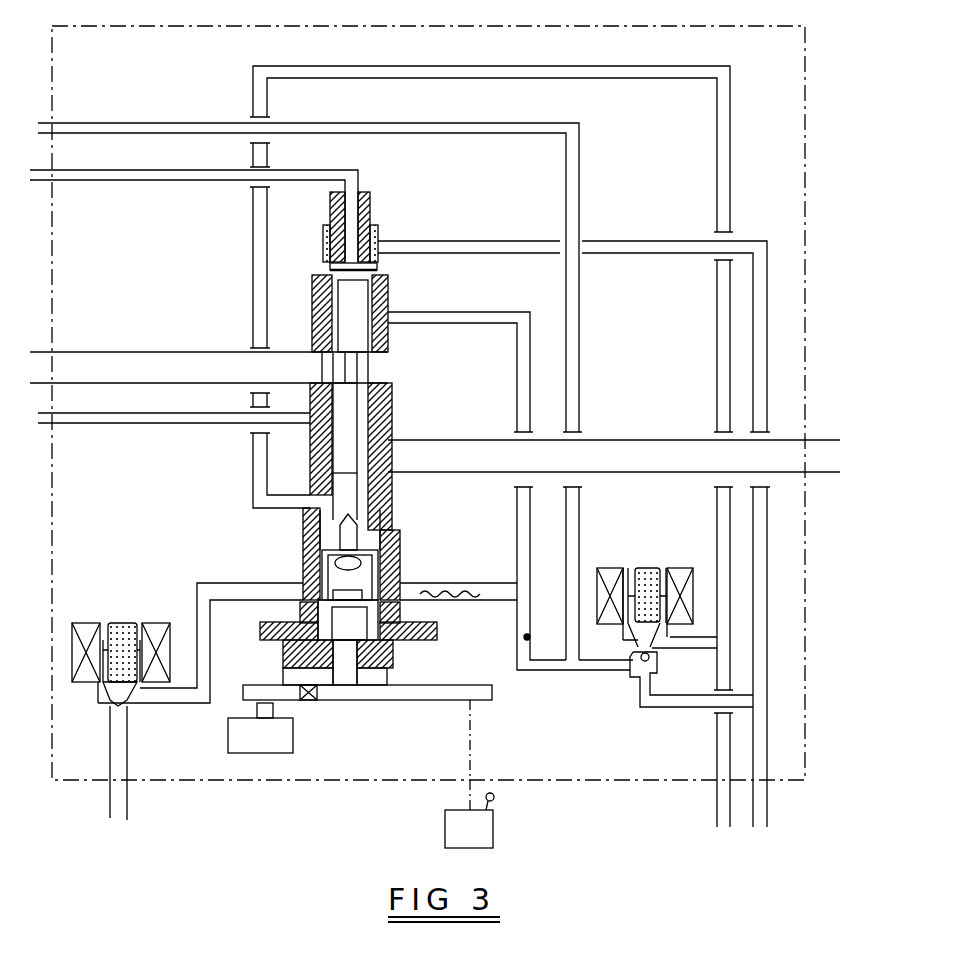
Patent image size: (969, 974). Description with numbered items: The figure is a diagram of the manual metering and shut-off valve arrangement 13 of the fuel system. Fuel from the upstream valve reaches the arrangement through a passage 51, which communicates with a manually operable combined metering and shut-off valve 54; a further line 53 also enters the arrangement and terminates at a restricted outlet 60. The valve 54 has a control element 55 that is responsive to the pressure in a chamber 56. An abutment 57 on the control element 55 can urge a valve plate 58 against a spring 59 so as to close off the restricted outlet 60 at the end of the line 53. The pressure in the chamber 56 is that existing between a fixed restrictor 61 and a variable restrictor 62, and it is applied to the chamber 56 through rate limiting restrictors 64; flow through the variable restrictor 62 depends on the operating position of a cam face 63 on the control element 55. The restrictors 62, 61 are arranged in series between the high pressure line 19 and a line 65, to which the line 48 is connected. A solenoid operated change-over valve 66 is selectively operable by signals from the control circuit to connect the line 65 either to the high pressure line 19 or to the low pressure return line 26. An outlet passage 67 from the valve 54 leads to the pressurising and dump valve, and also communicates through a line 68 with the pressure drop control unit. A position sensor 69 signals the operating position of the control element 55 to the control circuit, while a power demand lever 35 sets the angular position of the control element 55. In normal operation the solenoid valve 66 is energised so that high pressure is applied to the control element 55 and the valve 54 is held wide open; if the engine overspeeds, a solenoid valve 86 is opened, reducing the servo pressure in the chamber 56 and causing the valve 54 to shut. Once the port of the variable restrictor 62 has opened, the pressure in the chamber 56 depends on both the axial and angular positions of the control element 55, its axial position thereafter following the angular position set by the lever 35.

The valve arrangement 13 is at (292, 775).
The high pressure line 19 is at (768, 812).
The low pressure return line 26 is at (717, 812).
The power demand lever 35 is at (480, 830).
The line 48 is at (50, 123).
The passage 51 is at (40, 366).
The line 53 is at (45, 178).
The combined metering and shut-off valve 54 is at (412, 384).
The control element 55 is at (345, 427).
The chamber 56 is at (386, 662).
The abutment 57 is at (380, 265).
The valve plate 58 is at (330, 268).
The spring 59 is at (393, 245).
The restricted outlet 60 is at (354, 233).
The fixed restrictor 61 is at (522, 637).
The variable restrictor 62 is at (316, 316).
The cam face 63 is at (346, 286).
The rate limiting restrictors 64 is at (446, 586).
The line 65 is at (592, 668).
The solenoid operated change-over valve 66 is at (632, 560).
The outlet passage 67 is at (818, 473).
The line 68 is at (45, 423).
The position sensor 69 is at (295, 737).
The solenoid valve 86 is at (130, 695).